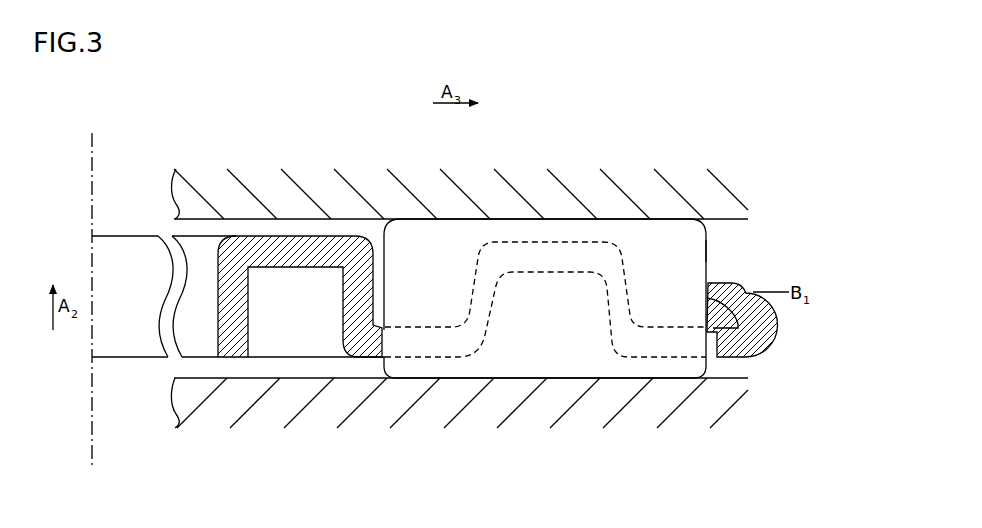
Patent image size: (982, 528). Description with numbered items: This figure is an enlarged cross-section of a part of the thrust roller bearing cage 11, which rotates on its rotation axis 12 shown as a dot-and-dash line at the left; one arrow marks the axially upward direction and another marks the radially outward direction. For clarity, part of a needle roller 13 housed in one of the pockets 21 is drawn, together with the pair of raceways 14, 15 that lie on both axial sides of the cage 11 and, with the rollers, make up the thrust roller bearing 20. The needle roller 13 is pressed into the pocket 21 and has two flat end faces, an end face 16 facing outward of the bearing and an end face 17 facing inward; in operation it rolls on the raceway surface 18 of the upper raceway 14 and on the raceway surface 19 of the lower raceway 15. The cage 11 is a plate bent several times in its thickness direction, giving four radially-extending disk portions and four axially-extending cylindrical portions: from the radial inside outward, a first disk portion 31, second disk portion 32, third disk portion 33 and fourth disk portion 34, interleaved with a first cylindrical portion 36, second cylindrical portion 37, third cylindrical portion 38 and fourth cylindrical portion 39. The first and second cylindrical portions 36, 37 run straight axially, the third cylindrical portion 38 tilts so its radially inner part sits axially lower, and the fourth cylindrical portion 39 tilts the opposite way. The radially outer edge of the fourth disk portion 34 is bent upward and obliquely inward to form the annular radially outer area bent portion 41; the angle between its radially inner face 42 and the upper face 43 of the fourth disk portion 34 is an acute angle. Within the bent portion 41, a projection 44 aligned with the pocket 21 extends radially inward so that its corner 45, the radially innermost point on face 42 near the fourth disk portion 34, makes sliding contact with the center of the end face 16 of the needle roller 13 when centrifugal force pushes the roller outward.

The thrust roller bearing cage 11 is at (792, 342).
The rotation axis 12 is at (93, 437).
The needle roller 13 is at (500, 360).
The raceway 14 is at (723, 195).
The raceway 15 is at (723, 418).
The end face 16 is at (708, 250).
The end face 17 is at (385, 237).
The raceway surface 18 is at (642, 222).
The raceway surface 19 is at (565, 365).
The thrust roller bearing 20 is at (752, 135).
The pocket 21 is at (380, 372).
The first disk portion 31 is at (293, 250).
The second disk portion 32 is at (423, 340).
The third disk portion 33 is at (542, 257).
The fourth disk portion 34 is at (706, 325).
The first cylindrical portion 36 is at (233, 330).
The second cylindrical portion 37 is at (348, 305).
The third cylindrical portion 38 is at (480, 303).
The fourth cylindrical portion 39 is at (617, 298).
The radially outer area bent portion 41 is at (745, 284).
The face 42 is at (712, 333).
The face 43 is at (740, 305).
The projection 44 is at (708, 297).
The corner 45 is at (706, 297).